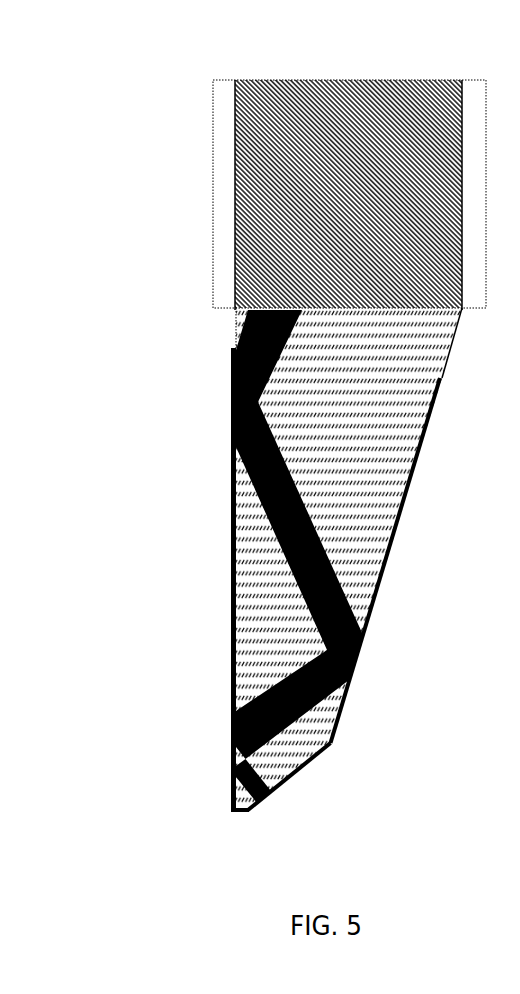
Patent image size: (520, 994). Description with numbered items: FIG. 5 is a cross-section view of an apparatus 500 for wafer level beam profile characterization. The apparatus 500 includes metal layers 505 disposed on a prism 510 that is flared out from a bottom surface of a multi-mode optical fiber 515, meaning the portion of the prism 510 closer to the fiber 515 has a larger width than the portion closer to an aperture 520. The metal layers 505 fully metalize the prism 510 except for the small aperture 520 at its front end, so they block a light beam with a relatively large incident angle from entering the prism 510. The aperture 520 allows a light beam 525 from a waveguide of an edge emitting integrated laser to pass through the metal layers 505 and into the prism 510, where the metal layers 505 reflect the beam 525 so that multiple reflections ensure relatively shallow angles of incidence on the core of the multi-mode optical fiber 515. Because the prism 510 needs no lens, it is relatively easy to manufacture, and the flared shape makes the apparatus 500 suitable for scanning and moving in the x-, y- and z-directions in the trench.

The apparatus 500 is at (125, 230).
The metal layers 505 is at (232, 583).
The prism 510 is at (442, 355).
The multi-mode optical fiber 515 is at (265, 82).
The aperture 520 is at (212, 789).
The light beam 525 is at (214, 757).